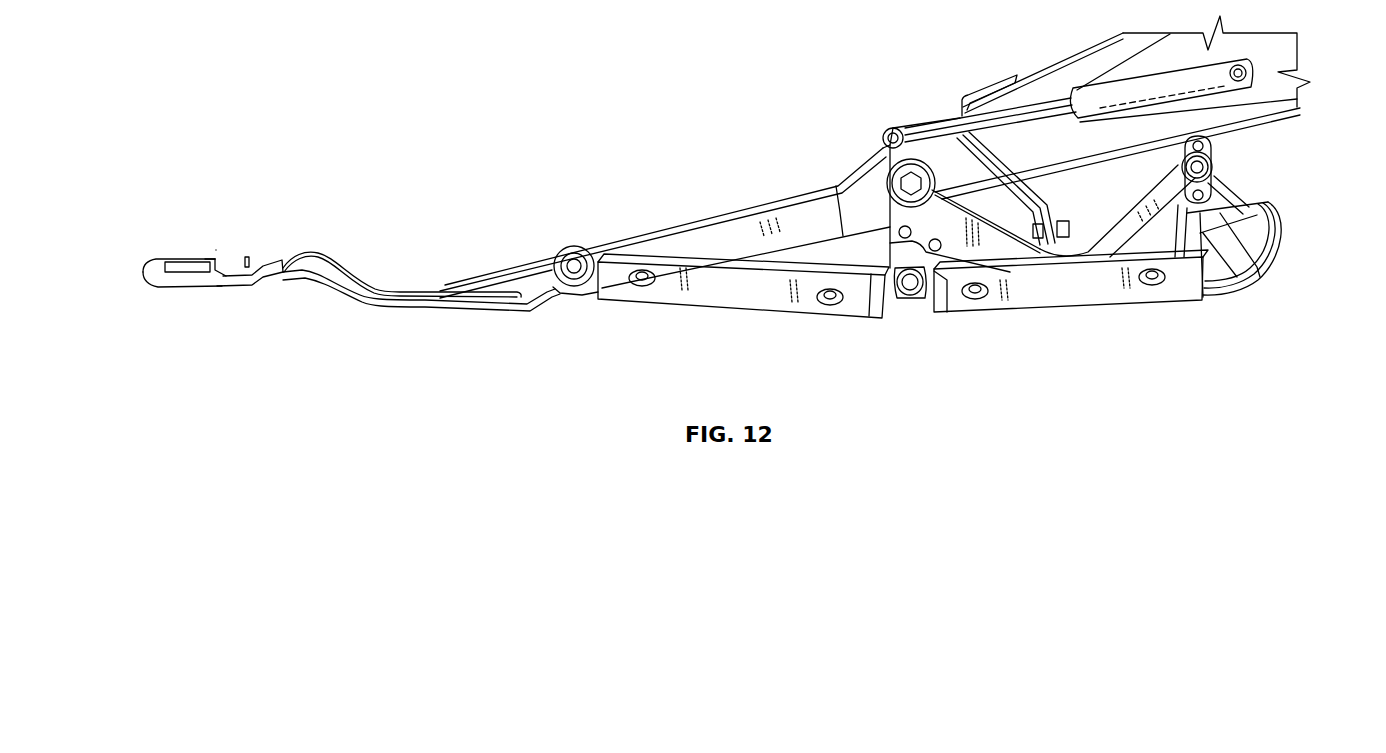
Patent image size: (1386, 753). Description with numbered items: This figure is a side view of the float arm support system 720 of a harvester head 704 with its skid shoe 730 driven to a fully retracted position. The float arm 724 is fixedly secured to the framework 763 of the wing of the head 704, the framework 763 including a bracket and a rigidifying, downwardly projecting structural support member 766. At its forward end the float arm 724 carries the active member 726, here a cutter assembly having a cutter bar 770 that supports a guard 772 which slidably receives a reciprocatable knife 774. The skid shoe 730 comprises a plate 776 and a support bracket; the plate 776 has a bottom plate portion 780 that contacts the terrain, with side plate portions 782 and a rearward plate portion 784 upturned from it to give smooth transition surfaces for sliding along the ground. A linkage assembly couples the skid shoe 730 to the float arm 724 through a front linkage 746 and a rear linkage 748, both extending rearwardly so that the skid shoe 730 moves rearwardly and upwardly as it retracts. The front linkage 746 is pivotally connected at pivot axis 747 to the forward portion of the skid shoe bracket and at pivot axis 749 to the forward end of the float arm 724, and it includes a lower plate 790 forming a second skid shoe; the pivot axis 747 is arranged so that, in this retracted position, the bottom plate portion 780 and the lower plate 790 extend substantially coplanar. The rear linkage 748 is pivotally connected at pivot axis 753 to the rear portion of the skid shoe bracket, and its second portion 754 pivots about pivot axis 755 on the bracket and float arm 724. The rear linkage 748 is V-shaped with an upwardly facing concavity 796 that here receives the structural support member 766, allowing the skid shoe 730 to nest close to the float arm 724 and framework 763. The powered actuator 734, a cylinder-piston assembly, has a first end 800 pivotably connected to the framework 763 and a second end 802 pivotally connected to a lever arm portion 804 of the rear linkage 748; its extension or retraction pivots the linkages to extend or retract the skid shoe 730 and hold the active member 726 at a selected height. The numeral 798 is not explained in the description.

The head 704 is at (328, 148).
The float arm support system 720 is at (810, 328).
The float arm 724 is at (724, 200).
The active member 726 is at (216, 245).
The skid shoe 730 is at (1172, 320).
The powered actuator 734 is at (1102, 70).
The front linkage 746 is at (740, 315).
The pivot axis 747 is at (910, 298).
The rear linkage 748 is at (880, 218).
The pivot axis 749 is at (578, 248).
The pivot axis 753 is at (1214, 165).
The second portion 754 is at (905, 155).
The pivot axis 755 is at (934, 177).
The framework 763 is at (1240, 40).
The structural support member 766 is at (1062, 212).
The cutter bar 770 is at (229, 268).
The guard 772 is at (187, 288).
The reciprocatable knife 774 is at (210, 262).
The plate 776 is at (1070, 313).
The bottom plate portion 780 is at (1088, 309).
The side plate portions 782 is at (1022, 292).
The rearward plate portion 784 is at (1280, 208).
The lower plate 790 is at (652, 300).
The concavity 796 is at (1077, 256).
The sector edge 798 is at (1257, 283).
The first end 800 is at (1300, 105).
The second end 802 is at (890, 128).
The lever arm portion 804 is at (881, 143).